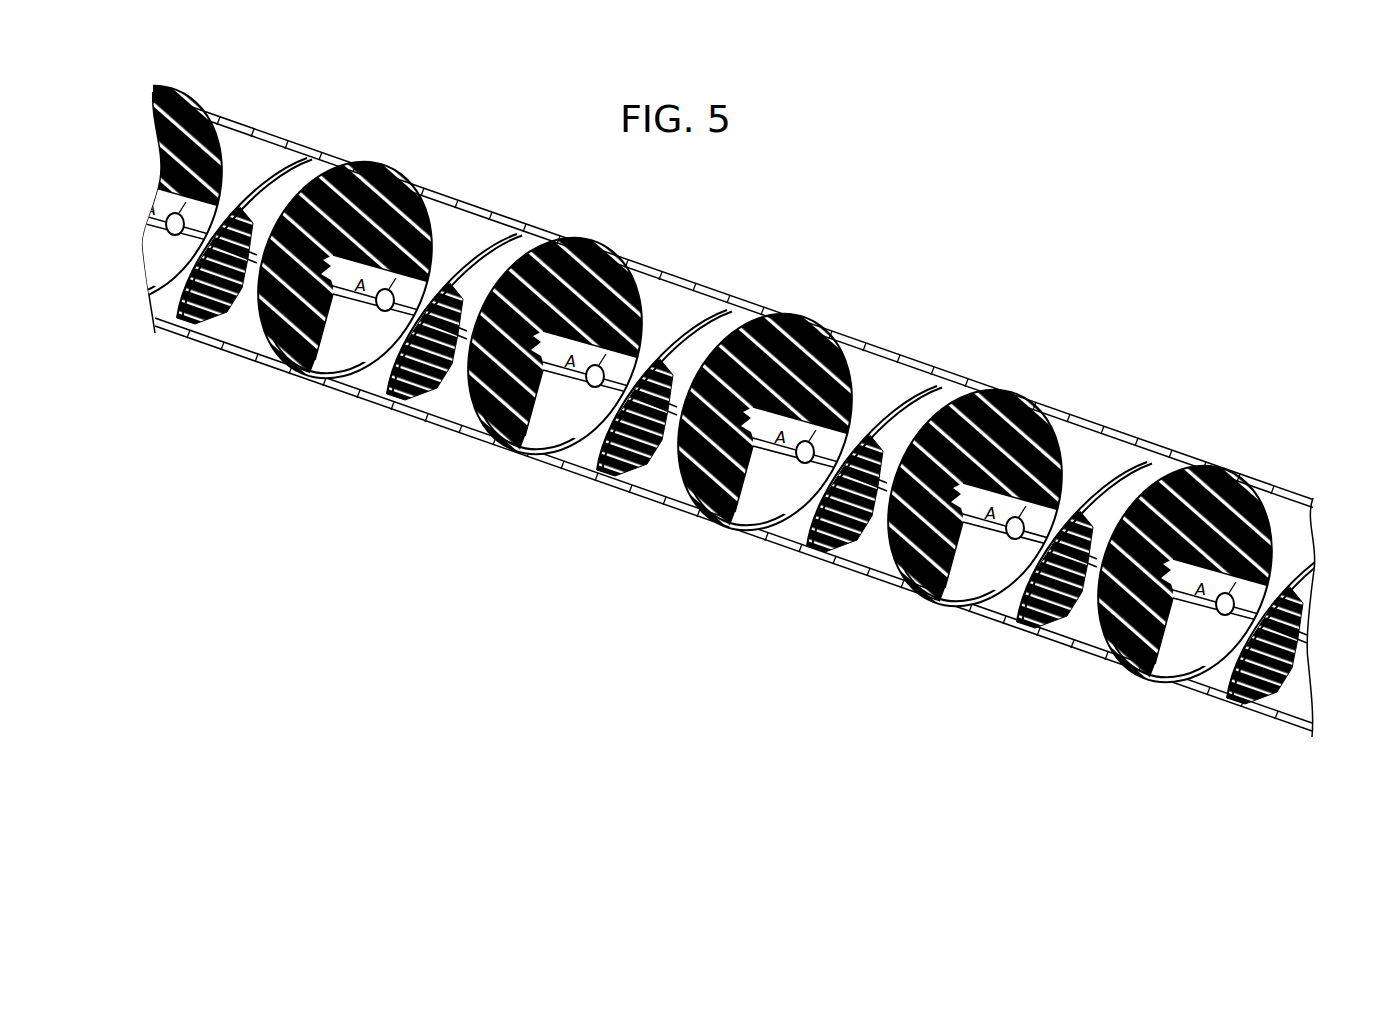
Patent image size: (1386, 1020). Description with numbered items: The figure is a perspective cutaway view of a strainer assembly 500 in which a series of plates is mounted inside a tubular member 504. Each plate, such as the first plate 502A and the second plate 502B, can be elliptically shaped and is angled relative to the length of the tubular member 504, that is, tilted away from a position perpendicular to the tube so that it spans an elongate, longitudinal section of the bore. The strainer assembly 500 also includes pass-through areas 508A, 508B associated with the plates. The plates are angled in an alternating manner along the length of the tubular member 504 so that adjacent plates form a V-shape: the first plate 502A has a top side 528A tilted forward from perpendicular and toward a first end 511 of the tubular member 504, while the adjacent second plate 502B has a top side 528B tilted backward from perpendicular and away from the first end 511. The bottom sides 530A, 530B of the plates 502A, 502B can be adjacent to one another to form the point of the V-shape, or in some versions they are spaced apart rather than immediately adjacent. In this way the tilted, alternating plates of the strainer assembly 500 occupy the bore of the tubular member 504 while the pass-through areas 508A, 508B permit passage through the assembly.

The strainer assembly 500 is at (790, 257).
The first plate 502A is at (1070, 600).
The second plate 502B is at (913, 405).
The tubular member 504 is at (716, 528).
The pass-through area 508A is at (1100, 477).
The pass-through area 508B is at (985, 600).
The first end 511 is at (1290, 716).
The top side 528A is at (1133, 470).
The top side 528B is at (937, 388).
The bottom side 530A is at (1040, 622).
The bottom side 530B is at (1000, 616).